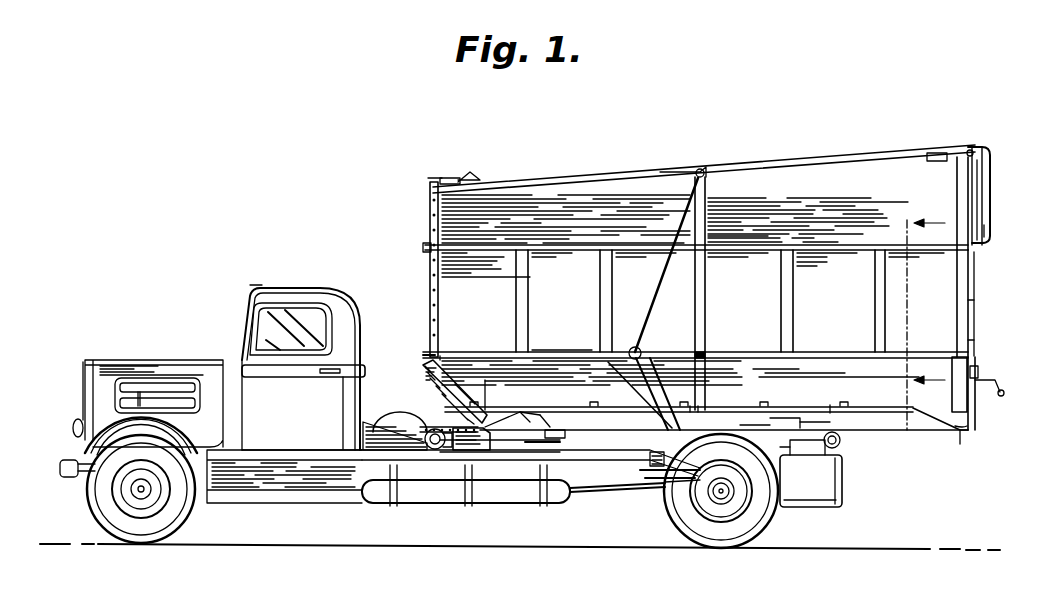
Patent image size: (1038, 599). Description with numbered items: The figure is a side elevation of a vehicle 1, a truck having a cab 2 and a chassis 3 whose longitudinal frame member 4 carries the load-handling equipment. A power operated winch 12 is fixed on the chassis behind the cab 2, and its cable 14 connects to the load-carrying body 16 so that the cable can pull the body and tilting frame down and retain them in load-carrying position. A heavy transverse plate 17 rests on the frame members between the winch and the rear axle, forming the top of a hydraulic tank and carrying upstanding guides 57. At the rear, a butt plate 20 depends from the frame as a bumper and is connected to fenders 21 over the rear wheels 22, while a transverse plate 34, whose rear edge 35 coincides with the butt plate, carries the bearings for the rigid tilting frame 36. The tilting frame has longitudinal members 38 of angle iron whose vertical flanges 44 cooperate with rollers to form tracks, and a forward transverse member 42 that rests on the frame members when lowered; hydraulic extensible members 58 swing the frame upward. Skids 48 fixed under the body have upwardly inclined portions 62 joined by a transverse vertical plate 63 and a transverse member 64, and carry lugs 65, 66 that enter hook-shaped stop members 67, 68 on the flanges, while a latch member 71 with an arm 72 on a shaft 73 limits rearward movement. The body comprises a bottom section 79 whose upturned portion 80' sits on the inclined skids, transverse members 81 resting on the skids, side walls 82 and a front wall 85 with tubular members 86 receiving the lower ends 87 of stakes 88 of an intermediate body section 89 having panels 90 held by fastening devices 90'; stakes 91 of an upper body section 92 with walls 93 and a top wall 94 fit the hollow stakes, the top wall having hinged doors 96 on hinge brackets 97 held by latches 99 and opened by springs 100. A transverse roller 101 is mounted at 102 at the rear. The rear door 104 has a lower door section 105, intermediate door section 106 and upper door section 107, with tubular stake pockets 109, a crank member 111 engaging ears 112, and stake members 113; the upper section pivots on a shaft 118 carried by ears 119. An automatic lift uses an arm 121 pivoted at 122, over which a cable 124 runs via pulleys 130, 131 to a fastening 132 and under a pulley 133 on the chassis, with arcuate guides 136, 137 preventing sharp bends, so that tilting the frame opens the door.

The vehicle 1 is at (184, 496).
The cab 2 is at (240, 356).
The chassis 3 is at (764, 510).
The longitudinal frame member 4 is at (606, 480).
The power operated winch 12 is at (366, 423).
The cable 14 is at (398, 418).
The load-carrying body 16 is at (428, 244).
The transverse plate 17 is at (562, 435).
The butt plate 20 is at (840, 487).
The fender 21 is at (802, 502).
The rear wheel 22 is at (678, 510).
The transverse plate 34 is at (838, 456).
The rear edge 35 is at (840, 442).
The tilting frame 36 is at (642, 478).
The longitudinal member 38 is at (500, 440).
The transverse member 42 is at (463, 441).
The flange 44 is at (616, 430).
The skid 48 is at (740, 409).
The upstanding guide 57 is at (528, 444).
The extensible member 58 is at (572, 484).
The inclined portion 62 is at (426, 361).
The transverse vertical plate 63 is at (420, 372).
The transverse member 64 is at (434, 434).
The lug 65 is at (494, 416).
The lug 66 is at (794, 417).
The hook-shaped stop member 67 is at (486, 387).
The hook-shaped stop member 68 is at (774, 409).
The latch member 71 is at (524, 416).
The arm 72 is at (549, 420).
The shaft 73 is at (548, 424).
The bottom section 79 is at (840, 401).
The upturned portion 80' is at (472, 361).
The transverse member 81 is at (838, 417).
The side wall 82 is at (742, 370).
The front wall 85 is at (442, 356).
The tubular member 86 is at (962, 362).
The lower end 87 is at (709, 353).
The stake 88 is at (716, 301).
The intermediate body section 89 is at (586, 262).
The panel 90 is at (833, 235).
The fastening device 90' is at (562, 336).
The stake 91 is at (726, 234).
The upper body section 92 is at (432, 187).
The side and front wall 93 is at (604, 182).
The top wall 94 is at (678, 172).
The hinged door 96 is at (556, 180).
The hinge bracket 97 is at (474, 177).
The latch 99 is at (928, 152).
The spring 100 is at (456, 176).
The transverse roller 101 is at (962, 442).
The roller mounting 102 is at (966, 428).
The door 104 is at (970, 276).
The lower door section 105 is at (972, 360).
The intermediate door section 106 is at (972, 322).
The upper door section 107 is at (984, 240).
The tubular stake pocket 109 is at (972, 344).
The crank member 111 is at (991, 380).
The ear 112 is at (978, 376).
The stake member 113 is at (972, 302).
The shaft 118 is at (982, 144).
The ear 119 is at (970, 150).
The arm 121 is at (982, 196).
The pivot 122 is at (962, 176).
The cable 124 is at (684, 234).
The pulley 130 is at (706, 180).
The pulley 131 is at (640, 350).
The cable fastening 132 is at (620, 367).
The pulley 133 is at (698, 404).
The arcuate guide track 136 is at (986, 224).
The arcuate guide 137 is at (988, 158).